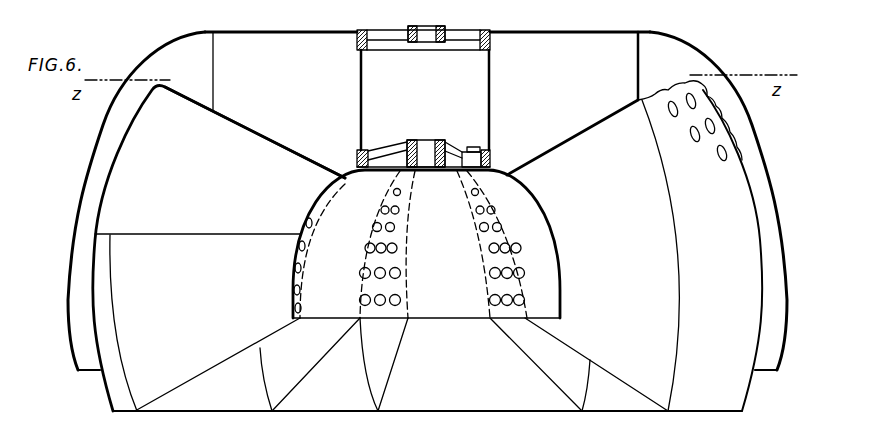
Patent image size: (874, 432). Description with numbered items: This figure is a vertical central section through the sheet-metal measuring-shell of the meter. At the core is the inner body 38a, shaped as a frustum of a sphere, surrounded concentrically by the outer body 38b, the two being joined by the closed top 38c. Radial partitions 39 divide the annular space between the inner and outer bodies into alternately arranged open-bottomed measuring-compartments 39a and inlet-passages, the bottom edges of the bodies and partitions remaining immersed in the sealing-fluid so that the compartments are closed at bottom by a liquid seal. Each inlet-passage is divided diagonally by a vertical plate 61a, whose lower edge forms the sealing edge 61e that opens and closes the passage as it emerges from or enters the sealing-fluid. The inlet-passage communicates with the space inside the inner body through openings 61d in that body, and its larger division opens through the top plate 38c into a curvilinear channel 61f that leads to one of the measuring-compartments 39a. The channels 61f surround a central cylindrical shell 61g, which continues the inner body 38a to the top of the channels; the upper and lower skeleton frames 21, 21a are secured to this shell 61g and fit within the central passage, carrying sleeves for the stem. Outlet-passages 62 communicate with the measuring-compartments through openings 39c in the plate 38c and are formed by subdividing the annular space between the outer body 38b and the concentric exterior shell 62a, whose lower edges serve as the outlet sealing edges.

The upper skeleton frame 21 is at (410, 30).
The lower skeleton frame 21a is at (395, 141).
The inner body 38a is at (562, 256).
The outer body 38b is at (122, 150).
The closed top 38c is at (268, 131).
The radial partitions 39 is at (233, 359).
The measuring-compartments 39a is at (669, 255).
The openings 39c is at (668, 116).
The vertical plate 61a is at (197, 210).
The openings 61d is at (334, 197).
The sealing edge 61e is at (120, 240).
The channel 61f is at (425, 71).
The central cylindrical shell 61g is at (358, 116).
The outlet-passages 62 is at (427, 201).
The concentric exterior shell 62a is at (66, 322).